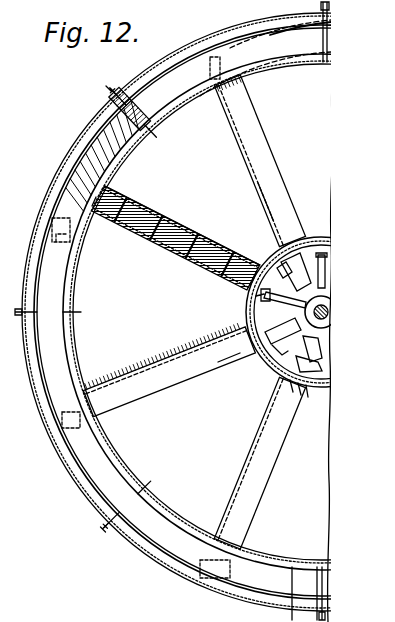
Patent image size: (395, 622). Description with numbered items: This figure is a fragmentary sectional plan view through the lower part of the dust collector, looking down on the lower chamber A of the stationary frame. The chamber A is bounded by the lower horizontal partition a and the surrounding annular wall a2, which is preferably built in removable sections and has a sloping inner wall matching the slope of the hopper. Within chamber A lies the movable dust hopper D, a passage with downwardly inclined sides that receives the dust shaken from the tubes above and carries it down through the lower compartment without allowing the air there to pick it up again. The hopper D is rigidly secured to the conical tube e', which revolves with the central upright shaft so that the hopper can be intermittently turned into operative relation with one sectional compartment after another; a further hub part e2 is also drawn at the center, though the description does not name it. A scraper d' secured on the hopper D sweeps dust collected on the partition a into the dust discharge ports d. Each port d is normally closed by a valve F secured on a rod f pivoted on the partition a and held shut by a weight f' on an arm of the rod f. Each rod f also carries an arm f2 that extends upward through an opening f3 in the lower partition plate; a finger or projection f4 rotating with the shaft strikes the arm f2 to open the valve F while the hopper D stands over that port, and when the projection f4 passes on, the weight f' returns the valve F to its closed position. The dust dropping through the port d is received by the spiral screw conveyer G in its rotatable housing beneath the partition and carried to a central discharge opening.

The chamber A is at (97, 343).
The lower horizontal partition a is at (229, 312).
The annular wall a2 is at (226, 44).
The dust discharge port d is at (194, 312).
The scraper d' is at (182, 221).
The dust hopper D is at (180, 270).
The conveyer G is at (168, 227).
The valve F is at (268, 178).
The rod f is at (188, 312).
The weight f' is at (137, 317).
The arm f2 is at (270, 262).
The opening f3 is at (262, 340).
The finger or projection f4 is at (290, 312).
The conical tube e' is at (304, 238).
The hub wedge e2 is at (308, 351).